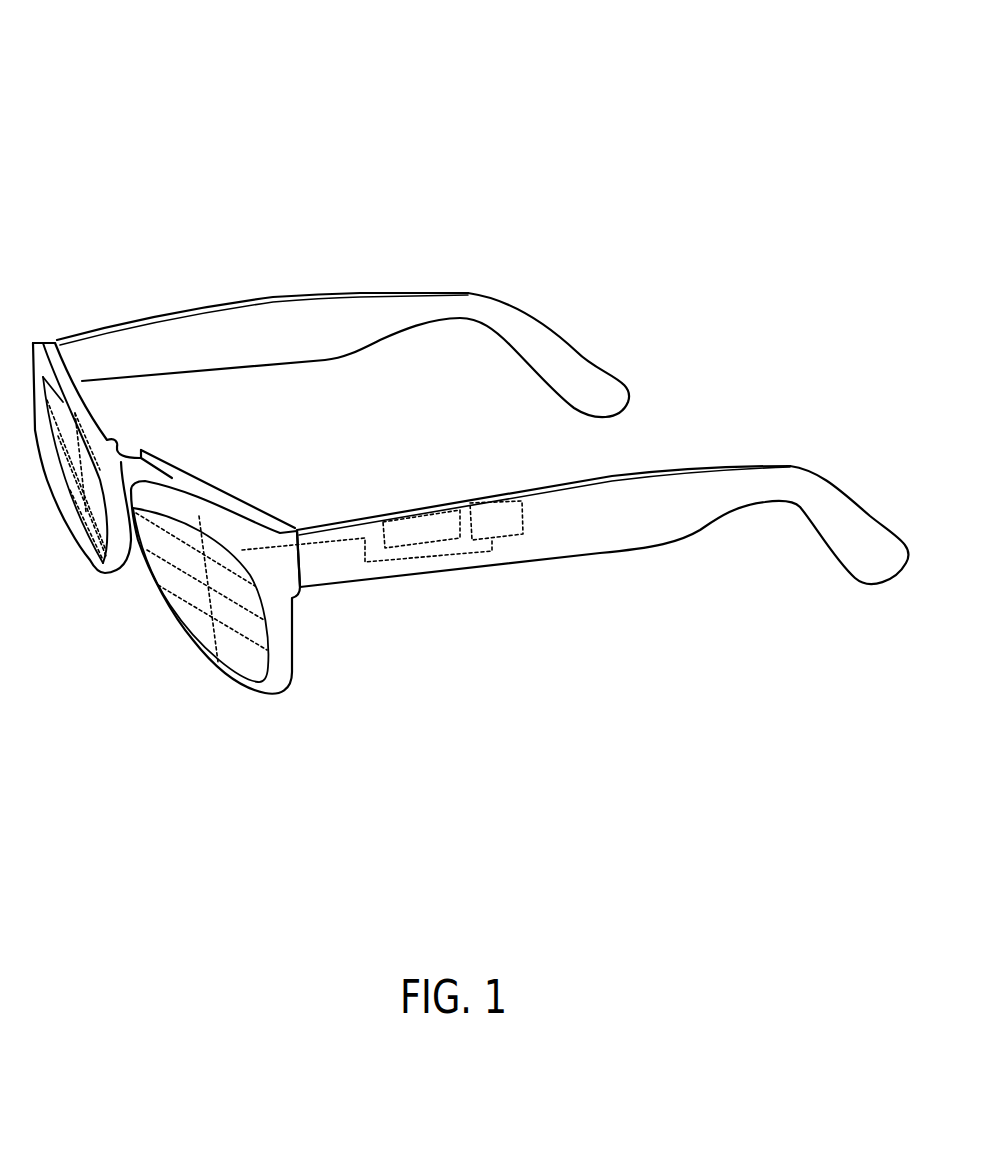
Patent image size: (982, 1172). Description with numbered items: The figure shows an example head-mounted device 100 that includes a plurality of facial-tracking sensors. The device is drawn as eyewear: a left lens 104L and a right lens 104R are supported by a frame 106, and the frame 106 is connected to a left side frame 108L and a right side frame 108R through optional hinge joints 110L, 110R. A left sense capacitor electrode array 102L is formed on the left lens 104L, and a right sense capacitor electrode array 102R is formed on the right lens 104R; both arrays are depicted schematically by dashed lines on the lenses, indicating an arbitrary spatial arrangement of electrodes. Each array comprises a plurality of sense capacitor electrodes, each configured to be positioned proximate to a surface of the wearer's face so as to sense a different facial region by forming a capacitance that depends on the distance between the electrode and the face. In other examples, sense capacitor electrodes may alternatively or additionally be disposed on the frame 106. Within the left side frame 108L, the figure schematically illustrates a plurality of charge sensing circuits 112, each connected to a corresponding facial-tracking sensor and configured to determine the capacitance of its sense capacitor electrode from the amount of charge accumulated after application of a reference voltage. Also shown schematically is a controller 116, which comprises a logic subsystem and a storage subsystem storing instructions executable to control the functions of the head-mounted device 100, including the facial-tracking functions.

The head-mounted device 100 is at (164, 46).
The right sense capacitor electrode array 102R is at (78, 478).
The left sense capacitor electrode array 102L is at (204, 619).
The right lens 104R is at (97, 426).
The left lens 104L is at (229, 512).
The frame 106 is at (208, 481).
The right side frame 108R is at (318, 323).
The left side frame 108L is at (707, 492).
The right hinge joint 110R is at (48, 342).
The left hinge joint 110L is at (300, 588).
The charge sensing circuits 112 is at (514, 536).
The controller 116 is at (440, 542).